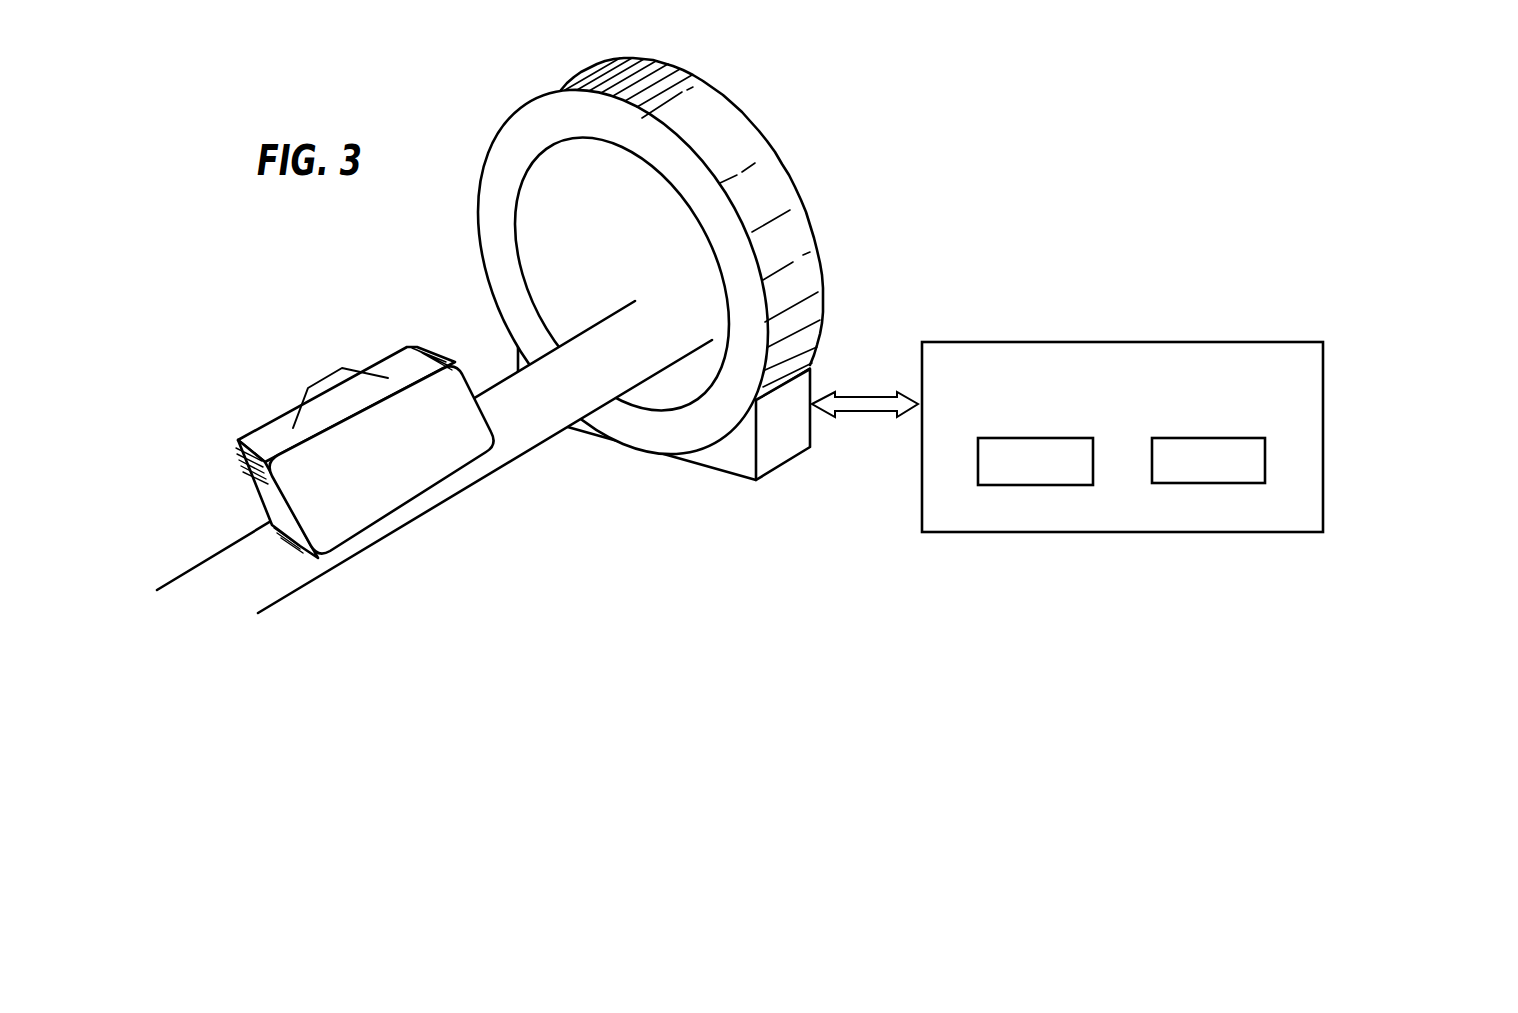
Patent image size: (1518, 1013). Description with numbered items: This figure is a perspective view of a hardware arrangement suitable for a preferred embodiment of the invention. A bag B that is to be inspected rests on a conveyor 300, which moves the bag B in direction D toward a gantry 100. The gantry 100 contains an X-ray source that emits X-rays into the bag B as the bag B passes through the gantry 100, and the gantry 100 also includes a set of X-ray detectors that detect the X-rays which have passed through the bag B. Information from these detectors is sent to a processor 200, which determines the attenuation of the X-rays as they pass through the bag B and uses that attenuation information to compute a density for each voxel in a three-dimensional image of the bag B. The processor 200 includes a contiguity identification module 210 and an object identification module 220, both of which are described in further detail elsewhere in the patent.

The gantry 100 is at (867, 247).
The processor 200 is at (988, 533).
The contiguity identification module 210 is at (1023, 465).
The object identification module 220 is at (1247, 465).
The conveyor 300 is at (282, 568).
The bag B is at (433, 470).
The direction D is at (350, 320).